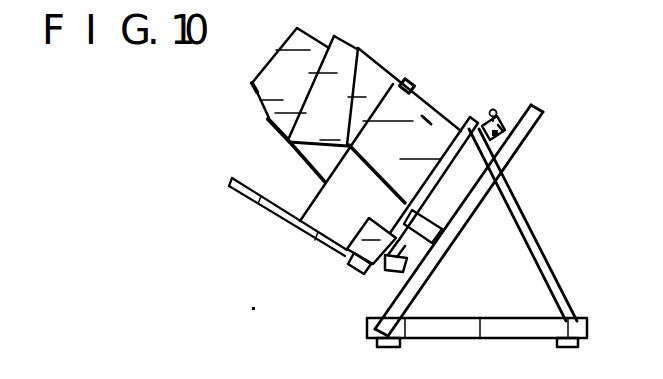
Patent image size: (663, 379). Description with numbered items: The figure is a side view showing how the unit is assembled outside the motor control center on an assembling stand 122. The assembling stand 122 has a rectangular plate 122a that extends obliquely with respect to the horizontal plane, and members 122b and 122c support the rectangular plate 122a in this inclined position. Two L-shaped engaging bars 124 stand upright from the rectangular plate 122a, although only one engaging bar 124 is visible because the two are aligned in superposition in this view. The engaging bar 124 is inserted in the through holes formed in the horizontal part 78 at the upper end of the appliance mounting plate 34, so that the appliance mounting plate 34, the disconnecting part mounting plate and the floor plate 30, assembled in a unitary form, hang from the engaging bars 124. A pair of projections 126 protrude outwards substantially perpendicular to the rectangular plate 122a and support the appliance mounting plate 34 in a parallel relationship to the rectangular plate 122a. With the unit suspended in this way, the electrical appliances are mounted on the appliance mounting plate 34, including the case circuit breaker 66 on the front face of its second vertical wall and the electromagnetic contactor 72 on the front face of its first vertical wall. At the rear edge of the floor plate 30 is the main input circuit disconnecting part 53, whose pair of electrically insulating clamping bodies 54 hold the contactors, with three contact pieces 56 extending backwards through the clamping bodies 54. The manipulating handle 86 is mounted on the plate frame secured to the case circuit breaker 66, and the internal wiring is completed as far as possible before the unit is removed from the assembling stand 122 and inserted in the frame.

The floor plate 30 is at (250, 200).
The appliance mounting plate 34 is at (433, 187).
The main input circuit disconnecting part 53 is at (367, 280).
The clamping bodies 54 is at (360, 267).
The contact pieces 56 is at (388, 275).
The case circuit breaker 66 is at (377, 64).
The electromagnetic contactor 72 is at (426, 121).
The horizontal part 78 is at (498, 125).
The manipulating handle 86 is at (255, 90).
The assembling stand 122 is at (505, 330).
The rectangular plate 122a is at (432, 270).
The supporting member 122b is at (556, 300).
The supporting member 122c is at (411, 325).
The L-shaped engaging bar 124 is at (492, 108).
The projections 126 is at (447, 236).